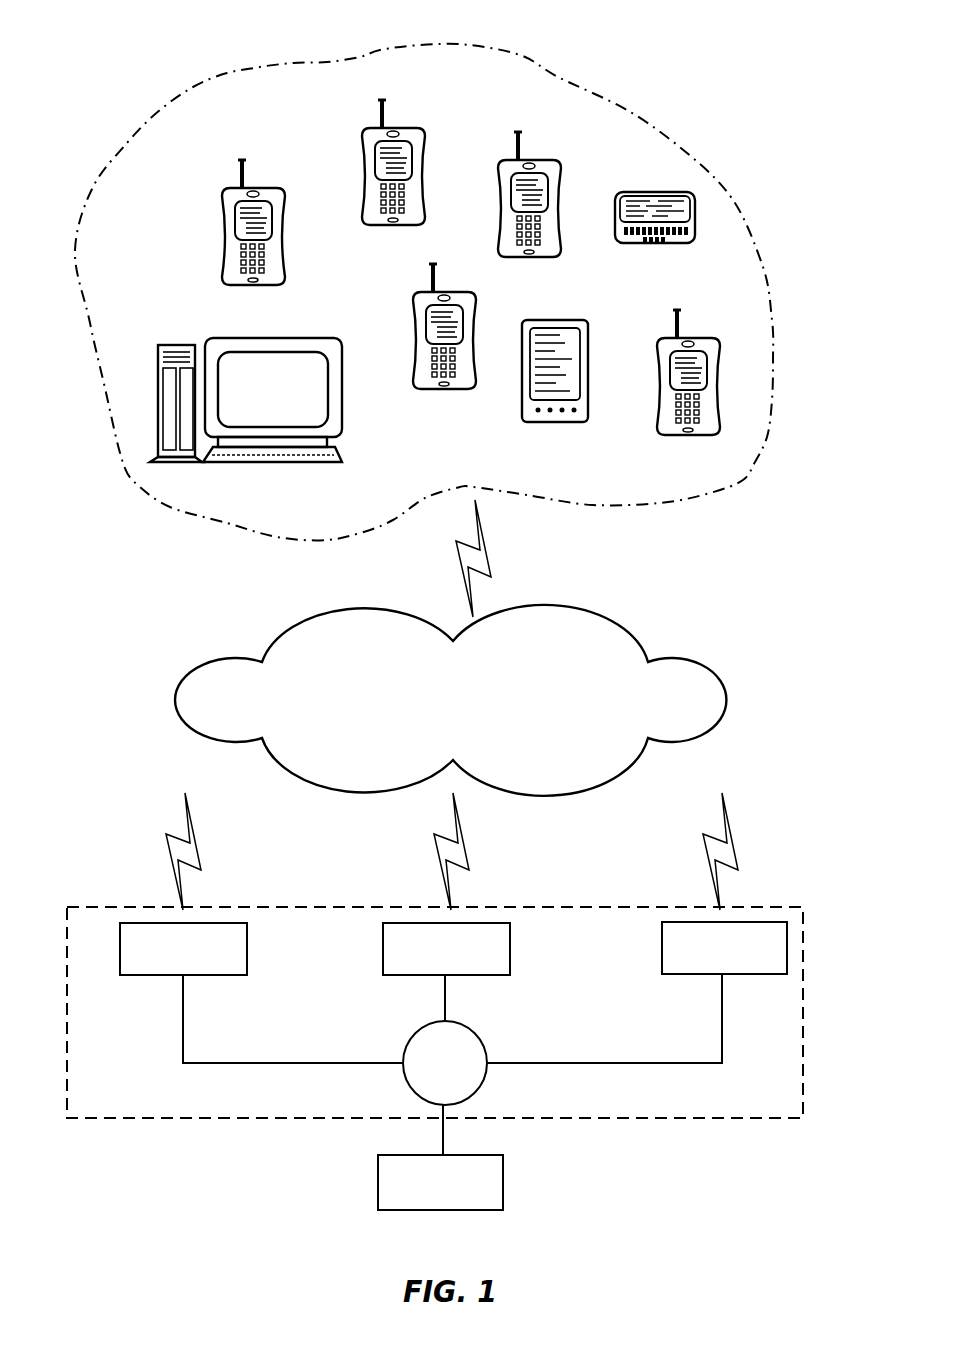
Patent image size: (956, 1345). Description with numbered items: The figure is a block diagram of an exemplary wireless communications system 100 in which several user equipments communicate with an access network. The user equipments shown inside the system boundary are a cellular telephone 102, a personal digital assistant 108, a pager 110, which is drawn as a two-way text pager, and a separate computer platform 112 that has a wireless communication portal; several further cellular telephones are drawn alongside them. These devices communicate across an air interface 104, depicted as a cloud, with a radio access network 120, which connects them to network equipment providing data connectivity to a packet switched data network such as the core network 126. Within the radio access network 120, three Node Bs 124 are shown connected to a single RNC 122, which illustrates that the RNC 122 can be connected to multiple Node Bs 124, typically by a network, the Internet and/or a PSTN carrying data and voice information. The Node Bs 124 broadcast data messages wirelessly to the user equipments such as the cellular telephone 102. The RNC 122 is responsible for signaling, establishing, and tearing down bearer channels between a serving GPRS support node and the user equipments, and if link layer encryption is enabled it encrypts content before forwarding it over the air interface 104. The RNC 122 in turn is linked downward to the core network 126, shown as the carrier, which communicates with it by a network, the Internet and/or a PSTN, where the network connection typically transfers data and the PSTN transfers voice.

The wireless communications system 100 is at (429, 274).
The cellular telephone 102 is at (413, 128).
The air interface 104 is at (727, 693).
The personal digital assistant 108 is at (522, 390).
The pager 110 is at (660, 245).
The computer platform 112 is at (270, 338).
The radio access network 120 is at (450, 995).
The RNC 122 is at (475, 1033).
The Node B 124 is at (697, 974).
The core network 126 is at (503, 1182).